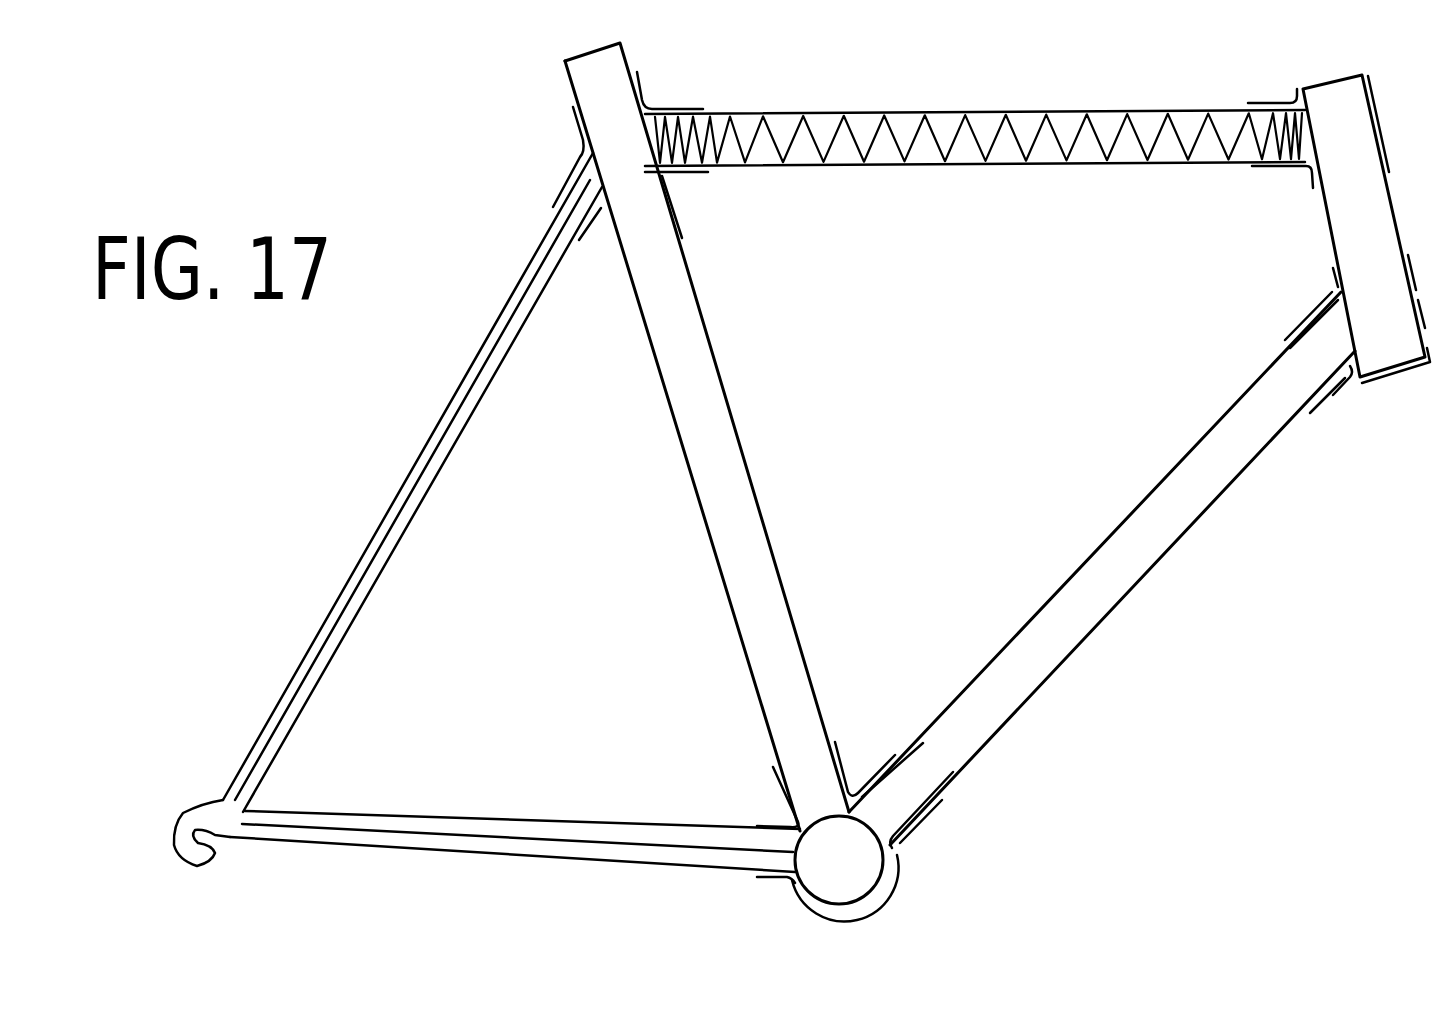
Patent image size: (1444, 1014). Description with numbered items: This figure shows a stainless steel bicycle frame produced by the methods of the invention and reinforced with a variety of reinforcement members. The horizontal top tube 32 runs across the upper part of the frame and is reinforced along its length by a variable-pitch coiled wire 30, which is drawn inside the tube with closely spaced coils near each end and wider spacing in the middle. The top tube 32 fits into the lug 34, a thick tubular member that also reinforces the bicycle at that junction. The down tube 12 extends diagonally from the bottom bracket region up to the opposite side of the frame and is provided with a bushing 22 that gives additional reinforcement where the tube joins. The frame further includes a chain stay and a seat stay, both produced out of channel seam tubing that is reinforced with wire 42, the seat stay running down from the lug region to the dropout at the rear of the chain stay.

The down tube 12 is at (1090, 638).
The bushing 22 is at (1273, 363).
The variable-pitch coiled wire 30 is at (870, 137).
The top tube 32 is at (1057, 110).
The lug 34 is at (678, 212).
The wire 42 is at (328, 637).